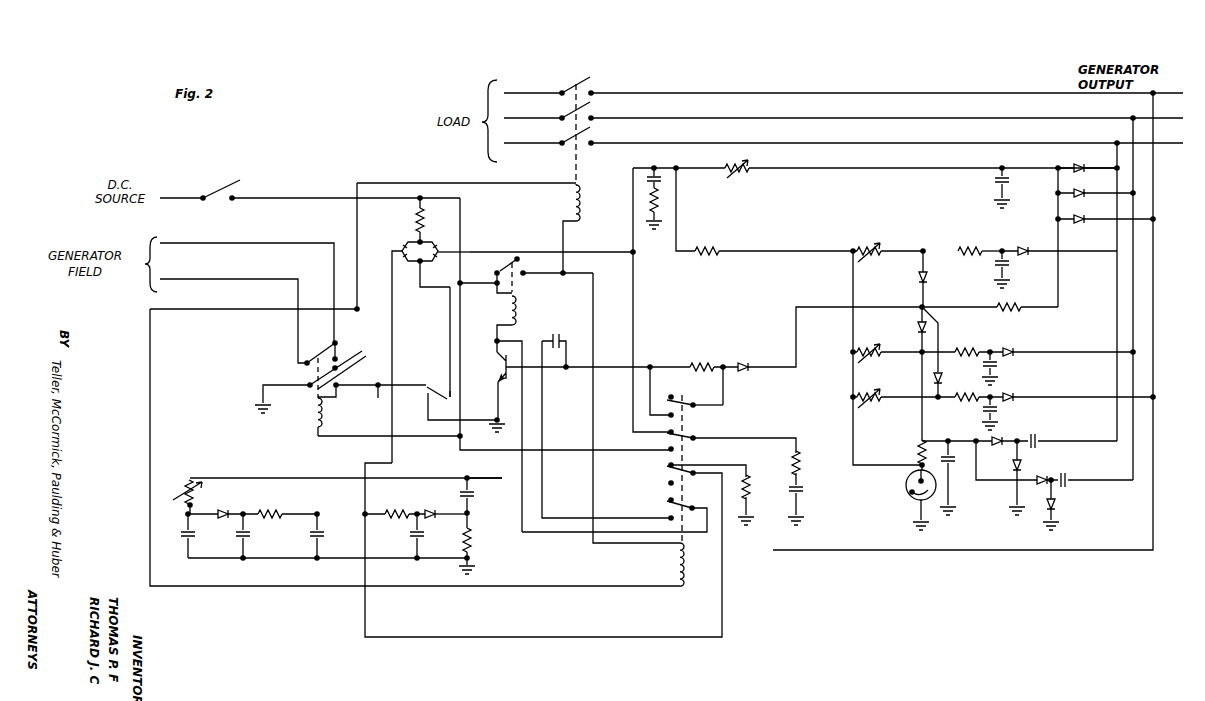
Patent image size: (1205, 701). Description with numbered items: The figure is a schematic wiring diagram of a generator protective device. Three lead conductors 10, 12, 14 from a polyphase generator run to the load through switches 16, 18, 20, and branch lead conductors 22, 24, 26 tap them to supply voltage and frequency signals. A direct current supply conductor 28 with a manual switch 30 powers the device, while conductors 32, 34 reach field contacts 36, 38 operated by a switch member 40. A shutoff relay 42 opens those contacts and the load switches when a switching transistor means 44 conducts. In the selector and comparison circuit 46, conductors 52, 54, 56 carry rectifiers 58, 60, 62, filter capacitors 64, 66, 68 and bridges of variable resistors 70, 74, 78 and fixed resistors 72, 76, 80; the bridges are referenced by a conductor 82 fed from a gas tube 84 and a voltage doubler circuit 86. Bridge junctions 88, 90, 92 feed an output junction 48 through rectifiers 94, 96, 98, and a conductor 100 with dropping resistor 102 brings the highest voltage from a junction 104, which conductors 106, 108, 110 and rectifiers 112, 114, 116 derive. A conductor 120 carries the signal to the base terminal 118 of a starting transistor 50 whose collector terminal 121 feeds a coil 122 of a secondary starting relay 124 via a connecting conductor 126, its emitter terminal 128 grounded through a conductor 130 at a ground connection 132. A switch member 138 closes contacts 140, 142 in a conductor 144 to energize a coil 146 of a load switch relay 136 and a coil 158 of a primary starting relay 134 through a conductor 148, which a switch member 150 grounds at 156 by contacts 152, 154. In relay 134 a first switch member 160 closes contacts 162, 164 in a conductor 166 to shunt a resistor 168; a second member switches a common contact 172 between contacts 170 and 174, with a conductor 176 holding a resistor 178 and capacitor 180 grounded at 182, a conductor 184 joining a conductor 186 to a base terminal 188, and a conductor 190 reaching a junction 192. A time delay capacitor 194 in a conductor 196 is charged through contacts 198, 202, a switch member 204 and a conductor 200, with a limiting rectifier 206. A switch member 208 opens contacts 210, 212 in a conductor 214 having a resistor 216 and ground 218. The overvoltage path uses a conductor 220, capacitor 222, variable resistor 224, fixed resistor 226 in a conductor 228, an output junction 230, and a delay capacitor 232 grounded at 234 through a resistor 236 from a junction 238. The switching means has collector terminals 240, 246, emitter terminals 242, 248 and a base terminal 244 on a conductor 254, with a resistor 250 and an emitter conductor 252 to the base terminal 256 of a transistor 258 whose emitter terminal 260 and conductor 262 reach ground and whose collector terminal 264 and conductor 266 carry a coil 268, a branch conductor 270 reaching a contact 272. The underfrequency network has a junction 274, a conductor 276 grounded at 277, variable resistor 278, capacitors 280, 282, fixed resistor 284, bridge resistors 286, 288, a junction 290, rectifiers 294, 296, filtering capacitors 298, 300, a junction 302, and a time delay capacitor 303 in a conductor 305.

The lead conductor 10 is at (795, 93).
The lead conductor 12 is at (838, 118).
The lead conductor 14 is at (875, 143).
The switch means 16 is at (584, 85).
The switch means 18 is at (562, 115).
The switch means 20 is at (562, 140).
The secondary or branch lead conductor 22 is at (1153, 249).
The secondary or branch lead conductor 24 is at (1133, 273).
The secondary or branch lead conductor 26 is at (1117, 298).
The direct current supply conductor 28 is at (262, 198).
The switch means 30 is at (236, 180).
The conductor 32 is at (228, 243).
The conductor 34 is at (228, 279).
The contact 36 is at (331, 343).
The contact 38 is at (303, 364).
The switch member 40 is at (320, 352).
The shutoff relay 42 is at (305, 394).
The switching transistor means 44 is at (401, 246).
The selector and comparison circuit 46 is at (845, 369).
The output junction 48 is at (918, 305).
The starting transistor means 50 is at (502, 360).
The first conductor 52 is at (1062, 259).
The second conductor 54 is at (1068, 354).
The third conductor 56 is at (1068, 398).
The rectifier 58 is at (1025, 256).
The rectifier 60 is at (1010, 357).
The rectifier 62 is at (1010, 401).
The capacitor 64 is at (996, 267).
The capacitor 66 is at (986, 363).
The capacitor 68 is at (986, 413).
The variable resistor 70 is at (872, 248).
The fixed resistor 72 is at (966, 248).
The variable resistor 74 is at (867, 349).
The fixed resistor 76 is at (962, 348).
The variable resistor 78 is at (867, 394).
The fixed resistor 80 is at (962, 393).
The conductor 82 is at (851, 321).
The gas tube 84 is at (906, 489).
The voltage doubler circuit 86 is at (997, 487).
The comparison junction 88 is at (925, 248).
The comparison junction 90 is at (936, 353).
The comparison junction 92 is at (922, 438).
The rectifier 94 is at (930, 278).
The rectifier 96 is at (920, 331).
The rectifier 98 is at (934, 381).
The conductor 100 is at (1046, 311).
The dropping resistor 102 is at (1006, 311).
The junction 104 is at (1057, 180).
The first conductor 106 is at (1114, 175).
The second conductor 108 is at (1130, 196).
The third conductor 110 is at (1112, 221).
The rectifier 112 is at (1075, 165).
The rectifier 114 is at (1097, 186).
The rectifier 116 is at (1107, 212).
The base terminal 118 is at (503, 381).
The conductor 120 is at (628, 367).
The collector terminal 121 is at (508, 347).
The coil 122 is at (518, 309).
The secondary starting relay 124 is at (518, 283).
The connecting conductor 126 is at (470, 286).
The emitter terminal 128 is at (500, 376).
The conductor 130 is at (495, 401).
The ground connection 132 is at (494, 436).
The primary starting relay 134 is at (655, 546).
The load switch relay 136 is at (586, 166).
The switch member 138 is at (513, 259).
The contact 140 is at (489, 279).
The contact 142 is at (527, 272).
The conductor 144 is at (596, 291).
The coil 146 is at (570, 204).
The conductor 148 is at (372, 183).
The switch member 150 is at (346, 373).
The contact 152 is at (305, 388).
The contact 154 is at (357, 360).
The ground 156 is at (256, 408).
The coil 158 is at (688, 561).
The first switch member 160 is at (675, 398).
The contact 162 is at (678, 417).
The contact 164 is at (700, 409).
The conductor 166 is at (725, 391).
The resistor 168 is at (700, 361).
The contact 170 is at (668, 432).
The common contact 172 is at (698, 438).
The contact 174 is at (670, 453).
The conductor 176 is at (800, 447).
The resistor 178 is at (802, 464).
The capacitor 180 is at (805, 493).
The ground 182 is at (805, 518).
The conductor 184 is at (636, 307).
The conductor 186 is at (508, 252).
The base terminal 188 is at (447, 251).
The conductor 190 is at (578, 450).
The junction 192 is at (458, 439).
The capacitor 194 is at (556, 335).
The conductor 196 is at (545, 499).
The contact 198 is at (669, 518).
The conductor 200 is at (568, 533).
The contact 202 is at (694, 507).
The switch member 204 is at (669, 503).
The rectifier 206 is at (743, 362).
The switch member 208 is at (680, 467).
The contact 210 is at (670, 470).
The contact 212 is at (723, 518).
The conductor 214 is at (749, 469).
The resistor 216 is at (751, 485).
The ground connection 218 is at (752, 515).
The conductor 220 is at (633, 171).
The capacitor 222 is at (998, 181).
The variable resistor 224 is at (738, 173).
The fixed resistor 226 is at (720, 251).
The conductor 228 is at (770, 251).
The junction 230 is at (680, 172).
The capacitor 232 is at (644, 204).
The ground 234 is at (638, 243).
The resistor 236 is at (660, 215).
The junction 238 is at (660, 168).
The collector terminal 240 is at (431, 240).
The emitter terminal 242 is at (426, 263).
The base terminal 244 is at (400, 255).
The collector terminal 246 is at (410, 240).
The emitter terminal 248 is at (396, 270).
The resistor 250 is at (424, 205).
The conductor 252 is at (448, 321).
The conductor 254 is at (360, 309).
The base terminal 256 is at (443, 395).
The transistor 258 is at (425, 395).
The emitter terminal 260 is at (440, 401).
The conductor 262 is at (460, 423).
The collector terminal 264 is at (428, 385).
The conductor 266 is at (378, 401).
The coil 268 is at (320, 438).
The branch conductor 270 is at (337, 392).
The contact 272 is at (324, 421).
The junction 274 is at (462, 479).
The conductor 276 is at (285, 481).
The ground 277 is at (462, 566).
The variable resistor 278 is at (190, 478).
The capacitor 280 is at (186, 540).
The capacitor 282 is at (471, 493).
The fixed resistor 284 is at (472, 541).
The resistor 286 is at (278, 512).
The resistor 288 is at (403, 512).
The junction 290 is at (214, 512).
The rectifier 294 is at (196, 527).
The rectifier 296 is at (433, 510).
The filtering capacitor 298 is at (255, 536).
The filtering capacitor 300 is at (412, 541).
The junction 302 is at (322, 536).
The time delay capacitor 303 is at (312, 545).
The conductor 305 is at (324, 546).